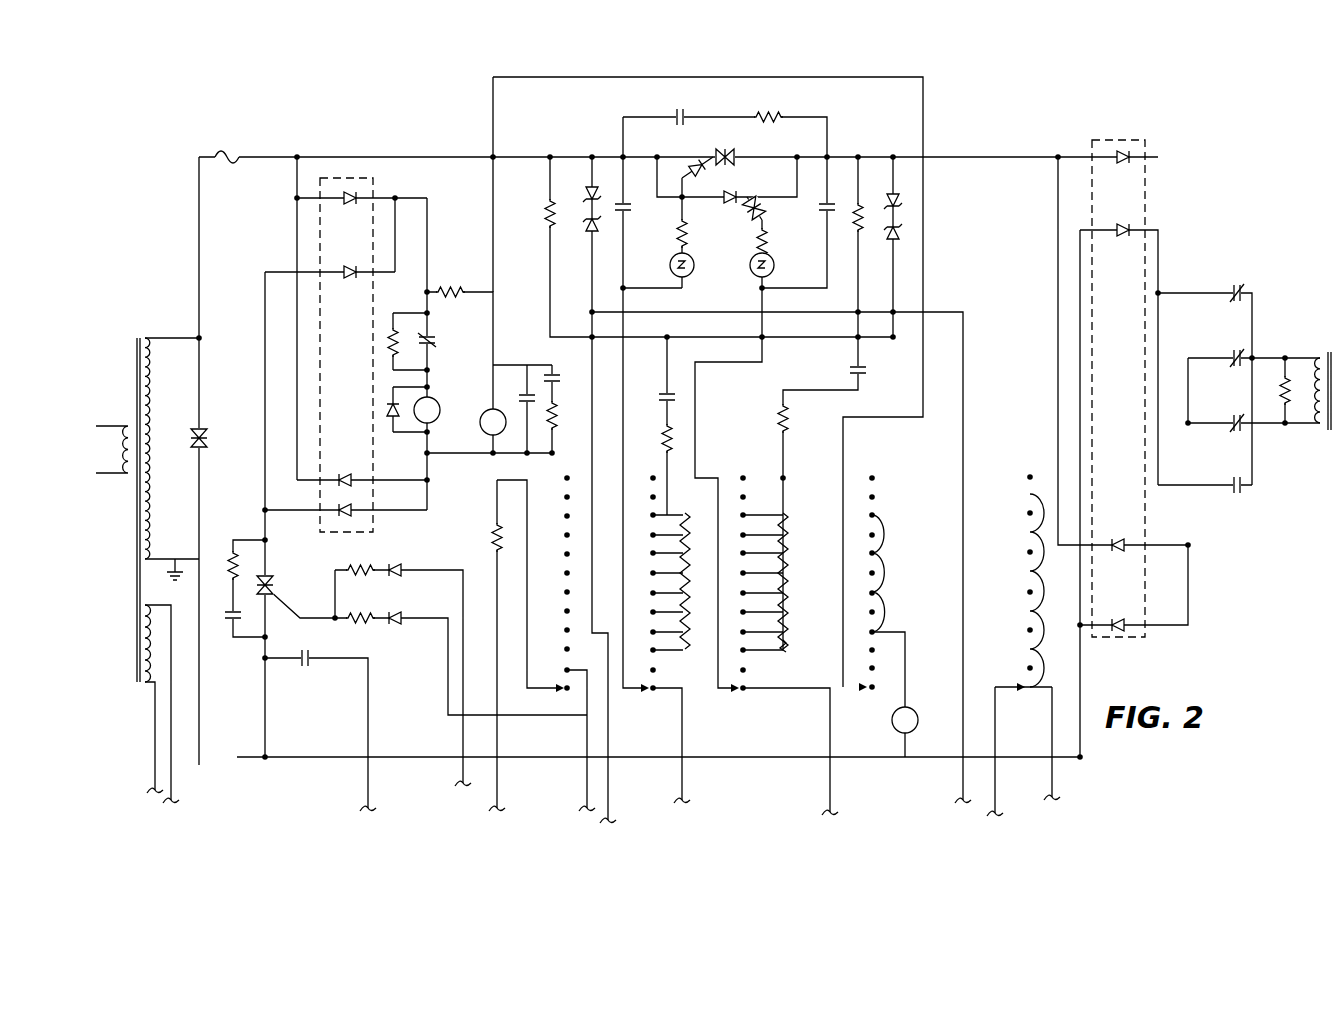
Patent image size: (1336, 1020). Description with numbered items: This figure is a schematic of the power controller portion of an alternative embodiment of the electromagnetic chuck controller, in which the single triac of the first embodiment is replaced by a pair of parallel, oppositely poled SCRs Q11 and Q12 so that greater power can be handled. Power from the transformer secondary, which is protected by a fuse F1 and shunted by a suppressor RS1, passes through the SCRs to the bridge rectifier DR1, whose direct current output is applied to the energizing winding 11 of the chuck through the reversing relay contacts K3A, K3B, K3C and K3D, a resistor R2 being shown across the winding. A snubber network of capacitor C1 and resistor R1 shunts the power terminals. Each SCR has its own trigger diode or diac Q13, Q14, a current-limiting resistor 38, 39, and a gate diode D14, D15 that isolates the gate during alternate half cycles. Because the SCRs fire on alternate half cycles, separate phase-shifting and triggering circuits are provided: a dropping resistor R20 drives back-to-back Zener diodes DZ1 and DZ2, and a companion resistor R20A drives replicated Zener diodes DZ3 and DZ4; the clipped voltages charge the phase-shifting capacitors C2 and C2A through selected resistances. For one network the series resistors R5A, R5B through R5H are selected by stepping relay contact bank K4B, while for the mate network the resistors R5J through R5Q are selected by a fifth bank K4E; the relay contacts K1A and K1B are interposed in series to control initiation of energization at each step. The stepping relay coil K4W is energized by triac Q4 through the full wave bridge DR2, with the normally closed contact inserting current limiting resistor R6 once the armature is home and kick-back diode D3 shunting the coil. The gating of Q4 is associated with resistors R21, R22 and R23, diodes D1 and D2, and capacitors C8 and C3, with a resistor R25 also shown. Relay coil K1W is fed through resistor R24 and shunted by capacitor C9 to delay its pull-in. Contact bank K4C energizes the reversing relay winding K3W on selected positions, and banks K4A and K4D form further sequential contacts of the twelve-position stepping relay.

The fuse F1 is at (240, 140).
The full wave bridge DR2 is at (337, 178).
The resistor R24 is at (451, 288).
The current limiting resistor R6 is at (390, 331).
The normally closed contact / fifth bank of sequential contacts K4E is at (434, 341).
The control winding of the stepping relay K4W is at (438, 407).
The kick-back diode D3 is at (390, 420).
The control winding of relay K1 K1W is at (480, 428).
The capacitor C9 is at (522, 397).
The suppressor RS1 is at (206, 441).
The resistor R21 is at (230, 558).
The capacitor C8 is at (226, 623).
The triac Q4 is at (272, 582).
The resistor R22 is at (374, 555).
The diode D1 is at (397, 564).
The resistor R23 is at (372, 624).
The diode D2 is at (398, 623).
The capacitor C3 is at (301, 663).
The resistor R25 is at (493, 532).
The relay contact K4A is at (564, 574).
The companion series resistor R20A is at (547, 212).
The Zener diode DZ1 is at (588, 184).
The Zener diode DZ2 is at (578, 239).
The capacitor C1 is at (680, 110).
The resistor R1 is at (768, 112).
The energy storage and phase-shifting capacitor C2 is at (628, 203).
The capacitor C2A is at (830, 200).
The diode D14 is at (706, 148).
The SCR Q11 is at (733, 157).
The diode D15 is at (757, 190).
The SCR Q12 is at (745, 205).
The current-limiting resistor 38 is at (677, 235).
The current-limiting resistor 39 is at (767, 237).
The trigger diode (diac) Q13 is at (695, 270).
The trigger diode (diac) Q14 is at (774, 266).
The dropping resistor R20 is at (854, 222).
The Zener diode DZ3 is at (900, 200).
The Zener diode DZ4 is at (900, 233).
The relay contact K1B is at (664, 393).
The phase-shifting resistor R5J is at (662, 438).
The phase-shifting resistor R5Q is at (690, 648).
The bank of contacts of the stepping relay K4B is at (749, 572).
The series resistor R5A is at (778, 420).
The series resistor R5B is at (802, 566).
The series resistor R5H is at (804, 654).
The normally open contacts K1A is at (863, 376).
The bank of sequential contacts K4C is at (885, 570).
The control winding of the reversing relay K3W is at (908, 733).
The bank of sequential contacts K4D is at (1024, 569).
The bridge rectifier DR1 is at (1145, 148).
The reversing relay contact K3A is at (1219, 284).
The reversing relay contact K3B is at (1219, 349).
The reversing relay contact K3C is at (1221, 414).
The reversing relay contact K3D is at (1218, 477).
The resistor R2 is at (1282, 400).
The energizing winding of the electromagnetic chuck 11 is at (1325, 354).